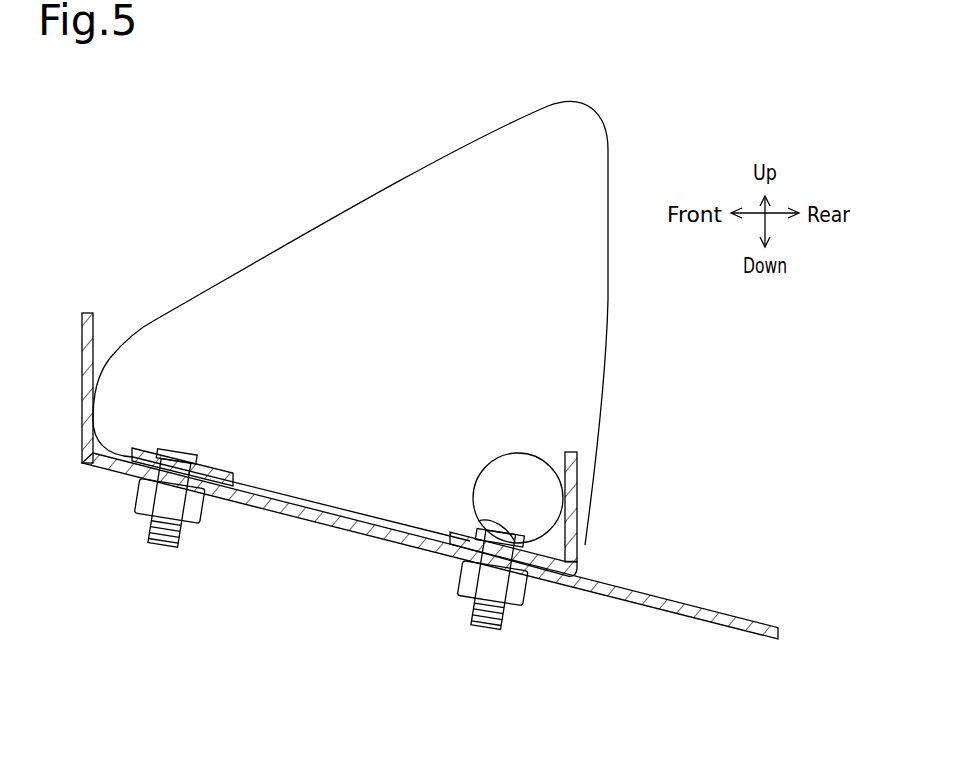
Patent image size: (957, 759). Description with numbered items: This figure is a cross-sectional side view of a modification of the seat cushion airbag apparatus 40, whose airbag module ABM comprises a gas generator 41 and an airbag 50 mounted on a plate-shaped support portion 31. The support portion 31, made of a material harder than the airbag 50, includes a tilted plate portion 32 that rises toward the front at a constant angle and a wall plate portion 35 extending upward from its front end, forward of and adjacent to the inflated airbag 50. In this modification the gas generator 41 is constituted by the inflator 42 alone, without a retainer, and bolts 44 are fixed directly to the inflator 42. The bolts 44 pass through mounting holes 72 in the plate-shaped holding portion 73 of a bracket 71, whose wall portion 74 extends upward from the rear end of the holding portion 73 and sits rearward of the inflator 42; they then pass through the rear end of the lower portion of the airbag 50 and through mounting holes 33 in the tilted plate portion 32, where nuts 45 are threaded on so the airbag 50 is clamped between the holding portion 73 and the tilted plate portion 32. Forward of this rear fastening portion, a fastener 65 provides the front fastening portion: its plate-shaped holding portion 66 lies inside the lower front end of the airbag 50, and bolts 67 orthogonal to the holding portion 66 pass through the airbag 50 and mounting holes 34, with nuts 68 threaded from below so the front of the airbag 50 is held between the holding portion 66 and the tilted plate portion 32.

The support portion 31 is at (407, 476).
The tilted plate portion 32 is at (123, 468).
The mounting holes 33 is at (470, 585).
The mounting holes 34 is at (168, 488).
The wall plate portion 35 is at (82, 433).
The airbag apparatus 40 is at (383, 323).
The gas generator 41 is at (485, 473).
The inflator 42 is at (513, 458).
The bolts 44 is at (521, 595).
The nuts 45 is at (527, 588).
The airbag 50 is at (609, 315).
The fastener 65 is at (210, 490).
The holding portion 66 is at (230, 474).
The bolts 67 is at (197, 510).
The nuts 68 is at (197, 508).
The bracket 71 is at (577, 514).
The mounting holes 72 is at (498, 528).
The holding portion 73 is at (552, 543).
The wall portion 74 is at (578, 475).
The airbag module ABM is at (653, 403).